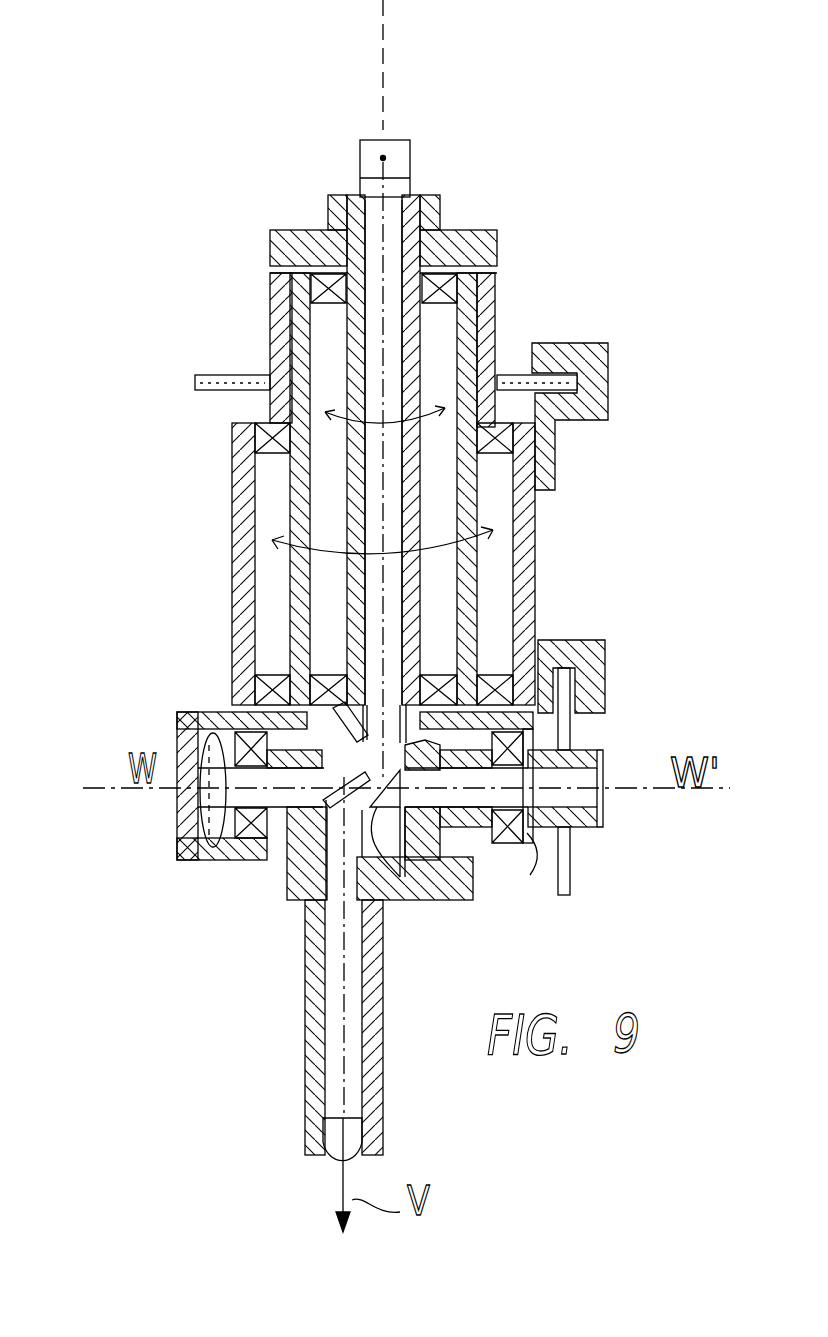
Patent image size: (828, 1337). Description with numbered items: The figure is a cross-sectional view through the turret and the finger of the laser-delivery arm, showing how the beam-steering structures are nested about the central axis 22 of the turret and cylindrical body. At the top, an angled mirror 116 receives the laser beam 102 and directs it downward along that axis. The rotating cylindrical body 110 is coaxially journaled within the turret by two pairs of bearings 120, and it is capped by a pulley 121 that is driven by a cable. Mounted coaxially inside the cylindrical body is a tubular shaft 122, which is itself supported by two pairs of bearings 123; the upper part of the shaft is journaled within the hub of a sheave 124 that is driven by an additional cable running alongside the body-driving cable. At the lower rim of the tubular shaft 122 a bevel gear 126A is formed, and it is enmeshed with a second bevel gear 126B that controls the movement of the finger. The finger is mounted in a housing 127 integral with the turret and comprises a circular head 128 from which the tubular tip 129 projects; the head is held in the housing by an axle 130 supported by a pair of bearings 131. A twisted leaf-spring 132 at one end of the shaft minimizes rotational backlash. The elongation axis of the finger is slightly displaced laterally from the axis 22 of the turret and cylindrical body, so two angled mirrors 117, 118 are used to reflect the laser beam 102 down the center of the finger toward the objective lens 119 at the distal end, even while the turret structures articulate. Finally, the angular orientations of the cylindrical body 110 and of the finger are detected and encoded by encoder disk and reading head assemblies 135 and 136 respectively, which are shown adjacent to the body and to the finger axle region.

The axis Z2,Z2' 22 is at (446, 390).
The angled mirror 116 is at (412, 163).
The laser beam 102 is at (345, 222).
The sheave 124 is at (270, 240).
The tubular shaft 122 is at (343, 337).
The rotating cylindrical body 110 is at (297, 493).
The pulley 121 is at (272, 290).
The bearings 123 is at (430, 292).
The encoder disk and reading head assembly 135 is at (515, 360).
The bearings 120 is at (257, 422).
The encoder disk and reading head assembly 136 is at (607, 665).
The axle 130 is at (582, 780).
The housing 127 is at (177, 747).
The twisted leaf-spring 132 is at (177, 715).
The bearings 131 is at (180, 843).
The bevel gear 126A is at (326, 724).
The second bevel gear 126B is at (417, 893).
The circular head 128 is at (263, 877).
The angled mirror 117 is at (405, 875).
The angled mirror 118 is at (277, 877).
The tubular tip 129 is at (386, 1005).
The objective lens 119 is at (362, 1164).